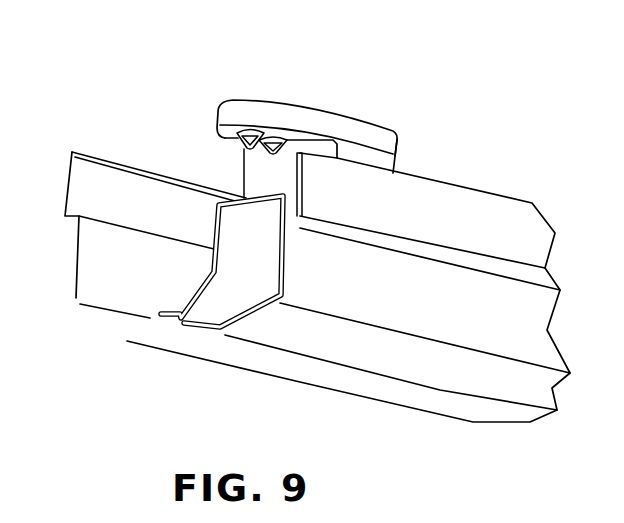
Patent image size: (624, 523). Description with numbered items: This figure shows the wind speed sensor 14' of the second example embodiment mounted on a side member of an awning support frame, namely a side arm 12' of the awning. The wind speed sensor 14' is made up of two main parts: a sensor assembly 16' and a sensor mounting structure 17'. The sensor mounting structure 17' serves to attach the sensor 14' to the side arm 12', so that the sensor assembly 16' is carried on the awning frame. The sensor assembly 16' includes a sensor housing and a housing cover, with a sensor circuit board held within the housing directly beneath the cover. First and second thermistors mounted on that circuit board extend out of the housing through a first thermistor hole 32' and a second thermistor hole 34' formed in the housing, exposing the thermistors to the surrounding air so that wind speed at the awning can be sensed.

The side arm 12' is at (141, 205).
The wind speed sensor 14' is at (307, 86).
The sensor assembly 16' is at (348, 249).
The sensor mounting structure 17' is at (150, 272).
The first thermistor hole 32' is at (322, 176).
The second thermistor hole 34' is at (193, 162).